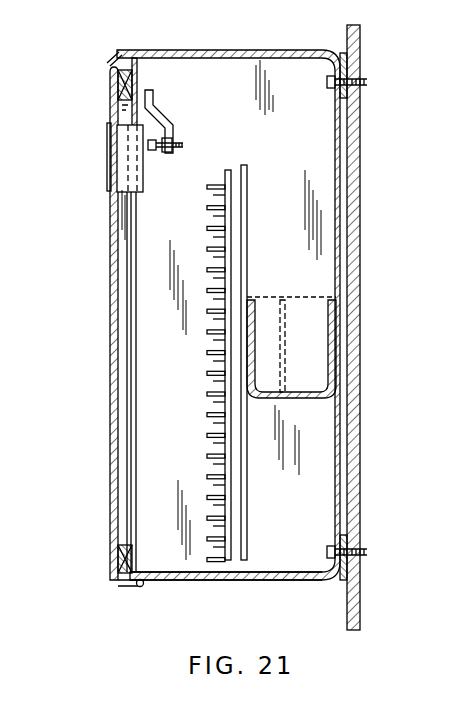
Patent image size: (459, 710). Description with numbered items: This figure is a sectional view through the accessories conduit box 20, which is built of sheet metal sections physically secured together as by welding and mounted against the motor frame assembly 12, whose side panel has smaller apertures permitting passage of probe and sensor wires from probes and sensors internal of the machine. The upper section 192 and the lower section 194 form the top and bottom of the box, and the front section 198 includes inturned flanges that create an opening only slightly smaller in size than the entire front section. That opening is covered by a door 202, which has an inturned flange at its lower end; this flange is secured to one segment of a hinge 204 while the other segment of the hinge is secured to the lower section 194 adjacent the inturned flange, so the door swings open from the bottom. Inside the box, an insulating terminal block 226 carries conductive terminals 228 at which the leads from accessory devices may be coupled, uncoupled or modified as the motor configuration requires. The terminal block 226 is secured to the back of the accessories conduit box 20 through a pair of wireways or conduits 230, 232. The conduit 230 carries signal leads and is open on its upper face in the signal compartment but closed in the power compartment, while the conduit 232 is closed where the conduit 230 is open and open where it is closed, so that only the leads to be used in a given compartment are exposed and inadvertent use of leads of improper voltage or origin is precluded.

The motor frame assembly 12 is at (350, 168).
The accessories conduit box 20 is at (142, 40).
The upper section 192 is at (262, 50).
The lower section 194 is at (268, 582).
The front section 198 is at (138, 78).
The door 202 is at (111, 270).
The hinge 204 is at (143, 588).
The insulating terminal block 226 is at (248, 190).
The conductive terminal 228 is at (214, 186).
The conduit 230 is at (268, 318).
The conduit 232 is at (306, 318).